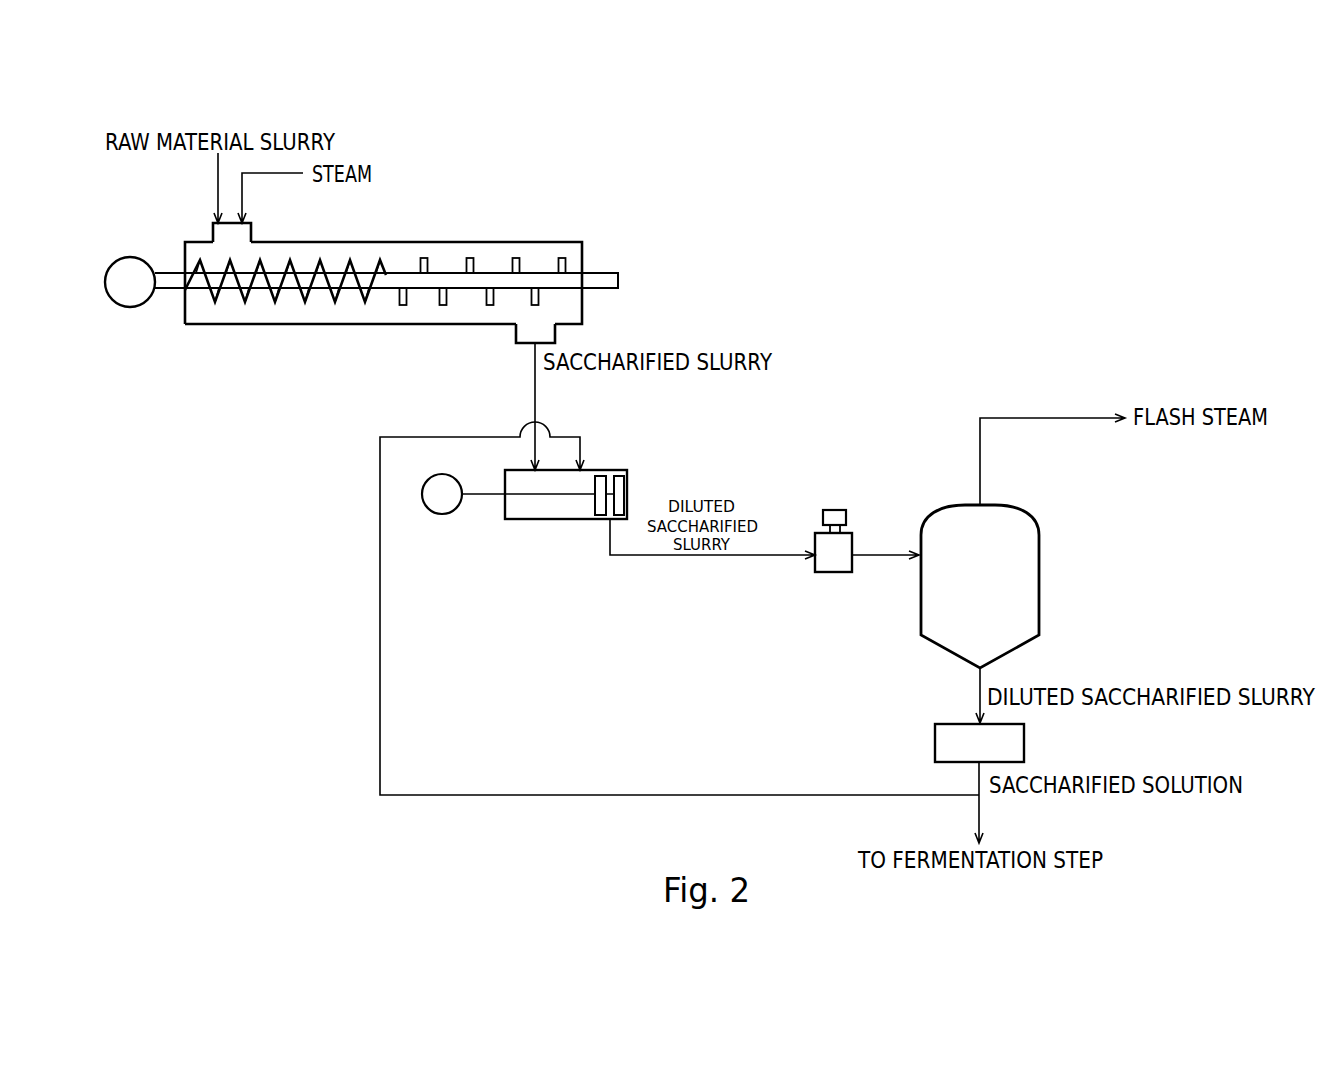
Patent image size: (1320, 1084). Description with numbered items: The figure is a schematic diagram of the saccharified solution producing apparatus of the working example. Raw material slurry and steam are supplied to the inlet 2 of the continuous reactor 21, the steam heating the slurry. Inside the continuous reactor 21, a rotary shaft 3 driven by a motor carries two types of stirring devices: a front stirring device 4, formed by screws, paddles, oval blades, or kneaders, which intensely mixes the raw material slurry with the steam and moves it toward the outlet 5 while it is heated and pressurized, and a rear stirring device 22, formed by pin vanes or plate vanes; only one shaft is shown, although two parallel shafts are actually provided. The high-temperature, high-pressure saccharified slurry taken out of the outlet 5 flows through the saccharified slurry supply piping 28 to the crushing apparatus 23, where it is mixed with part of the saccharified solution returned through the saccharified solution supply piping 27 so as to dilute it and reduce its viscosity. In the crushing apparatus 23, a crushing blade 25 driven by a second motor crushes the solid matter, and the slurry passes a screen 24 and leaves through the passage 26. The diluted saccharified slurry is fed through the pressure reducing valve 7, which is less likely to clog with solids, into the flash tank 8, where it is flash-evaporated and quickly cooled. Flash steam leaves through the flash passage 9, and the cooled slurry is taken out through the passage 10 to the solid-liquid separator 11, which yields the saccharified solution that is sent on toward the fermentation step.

The inlet 2 is at (212, 231).
The rotary shaft 3 is at (168, 290).
The stirring device 4 is at (305, 293).
The outlet 5 is at (522, 350).
The pressure reducing valve 7 is at (833, 575).
The flash tank 8 is at (1022, 513).
The flash passage 9 is at (1035, 417).
The passage 10 is at (982, 675).
The solid-liquid separator 11 is at (1024, 742).
The continuous reactor 21 is at (423, 242).
The stirring device 22 is at (516, 260).
The crushing apparatus 23 is at (552, 520).
The screen 24 is at (628, 482).
The crushing blade 25 is at (603, 468).
The passage 26 is at (660, 557).
The saccharified solution supply piping 27 is at (622, 795).
The saccharified slurry supply piping 28 is at (537, 385).